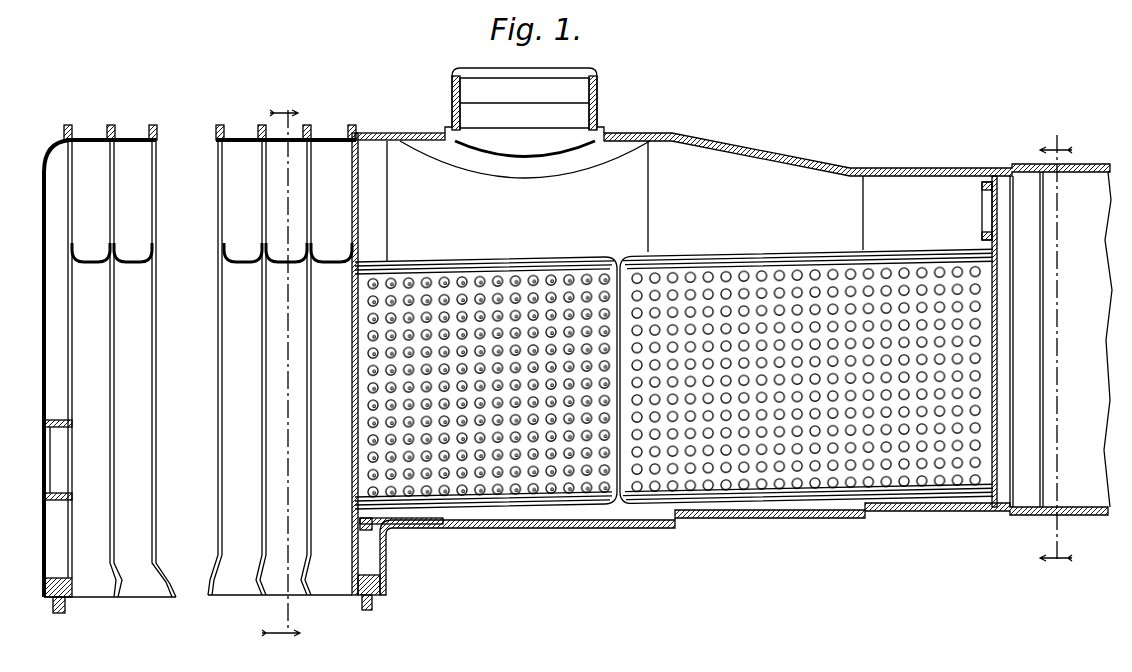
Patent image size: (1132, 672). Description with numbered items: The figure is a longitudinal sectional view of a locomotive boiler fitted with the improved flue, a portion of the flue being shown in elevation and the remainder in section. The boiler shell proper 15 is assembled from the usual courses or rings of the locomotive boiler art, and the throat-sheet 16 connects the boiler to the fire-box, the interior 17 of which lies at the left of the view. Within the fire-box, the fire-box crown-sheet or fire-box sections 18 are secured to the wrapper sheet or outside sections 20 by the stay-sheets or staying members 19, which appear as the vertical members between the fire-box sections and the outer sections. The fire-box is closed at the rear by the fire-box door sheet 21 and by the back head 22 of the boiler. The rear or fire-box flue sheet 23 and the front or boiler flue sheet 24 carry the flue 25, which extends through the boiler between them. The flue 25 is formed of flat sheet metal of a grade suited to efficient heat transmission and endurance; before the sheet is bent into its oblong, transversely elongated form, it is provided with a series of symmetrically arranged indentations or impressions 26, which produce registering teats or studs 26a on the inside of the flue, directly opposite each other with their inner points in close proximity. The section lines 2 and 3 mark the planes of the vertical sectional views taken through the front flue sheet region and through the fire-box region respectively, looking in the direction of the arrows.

The boiler shell 15 is at (756, 152).
The throat-sheet 16 is at (733, 556).
The fire-box interior 17 is at (280, 507).
The fire-box crown-sheet 18 is at (138, 258).
The stay-sheets 19 is at (261, 204).
The wrapper sheet 20 is at (129, 134).
The fire-box door sheet 21 is at (66, 421).
The back head 22 is at (42, 333).
The rear flue sheet 23 is at (358, 258).
The front flue sheet 24 is at (997, 244).
The flue 25 is at (727, 262).
The indentations 26 is at (765, 497).
The teats or studs 26a is at (513, 283).
The section line 2- 2 is at (1056, 359).
The section line 3- 3 is at (281, 377).